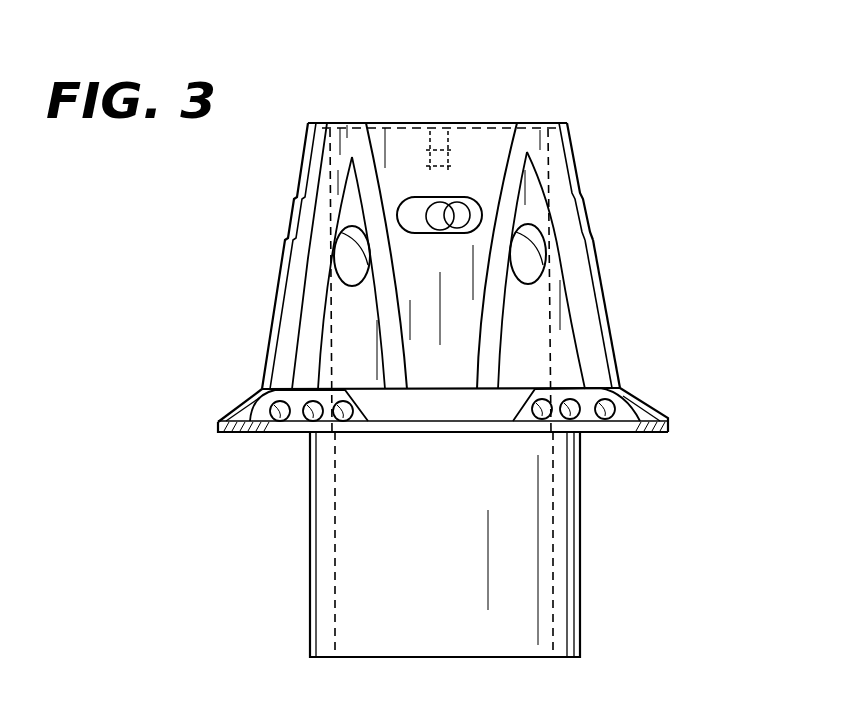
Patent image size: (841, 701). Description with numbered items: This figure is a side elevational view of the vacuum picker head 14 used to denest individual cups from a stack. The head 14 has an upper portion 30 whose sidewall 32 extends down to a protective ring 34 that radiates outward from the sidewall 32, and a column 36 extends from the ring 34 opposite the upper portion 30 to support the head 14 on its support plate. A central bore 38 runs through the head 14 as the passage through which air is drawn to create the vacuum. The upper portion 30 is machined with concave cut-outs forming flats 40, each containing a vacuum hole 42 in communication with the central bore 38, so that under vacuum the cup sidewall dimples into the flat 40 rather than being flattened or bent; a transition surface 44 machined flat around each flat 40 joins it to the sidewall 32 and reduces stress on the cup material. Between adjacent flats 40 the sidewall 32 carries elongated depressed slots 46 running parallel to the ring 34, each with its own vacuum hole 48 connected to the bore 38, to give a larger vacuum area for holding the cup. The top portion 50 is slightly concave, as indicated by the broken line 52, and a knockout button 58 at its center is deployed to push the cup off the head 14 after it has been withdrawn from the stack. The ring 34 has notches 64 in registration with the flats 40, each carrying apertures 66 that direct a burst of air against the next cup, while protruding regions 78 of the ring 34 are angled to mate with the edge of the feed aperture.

The picker head 14 is at (172, 247).
The upper portion 30 is at (721, 118).
The sidewall 32 is at (578, 165).
The protective ring 34 is at (726, 387).
The column 36 is at (580, 563).
The central bore 38 is at (333, 550).
The flat region 40 is at (316, 330).
The vacuum hole 42 is at (343, 250).
The transition surface 44 is at (288, 353).
The depressed slot 46 is at (467, 215).
The vacuum hole 48 is at (440, 214).
The top portion 50 is at (567, 122).
The broken line 52 is at (387, 125).
The knockout button 58 is at (430, 125).
The notch 64 is at (248, 435).
The aperture 66 is at (278, 428).
The protruding region 78 is at (643, 403).